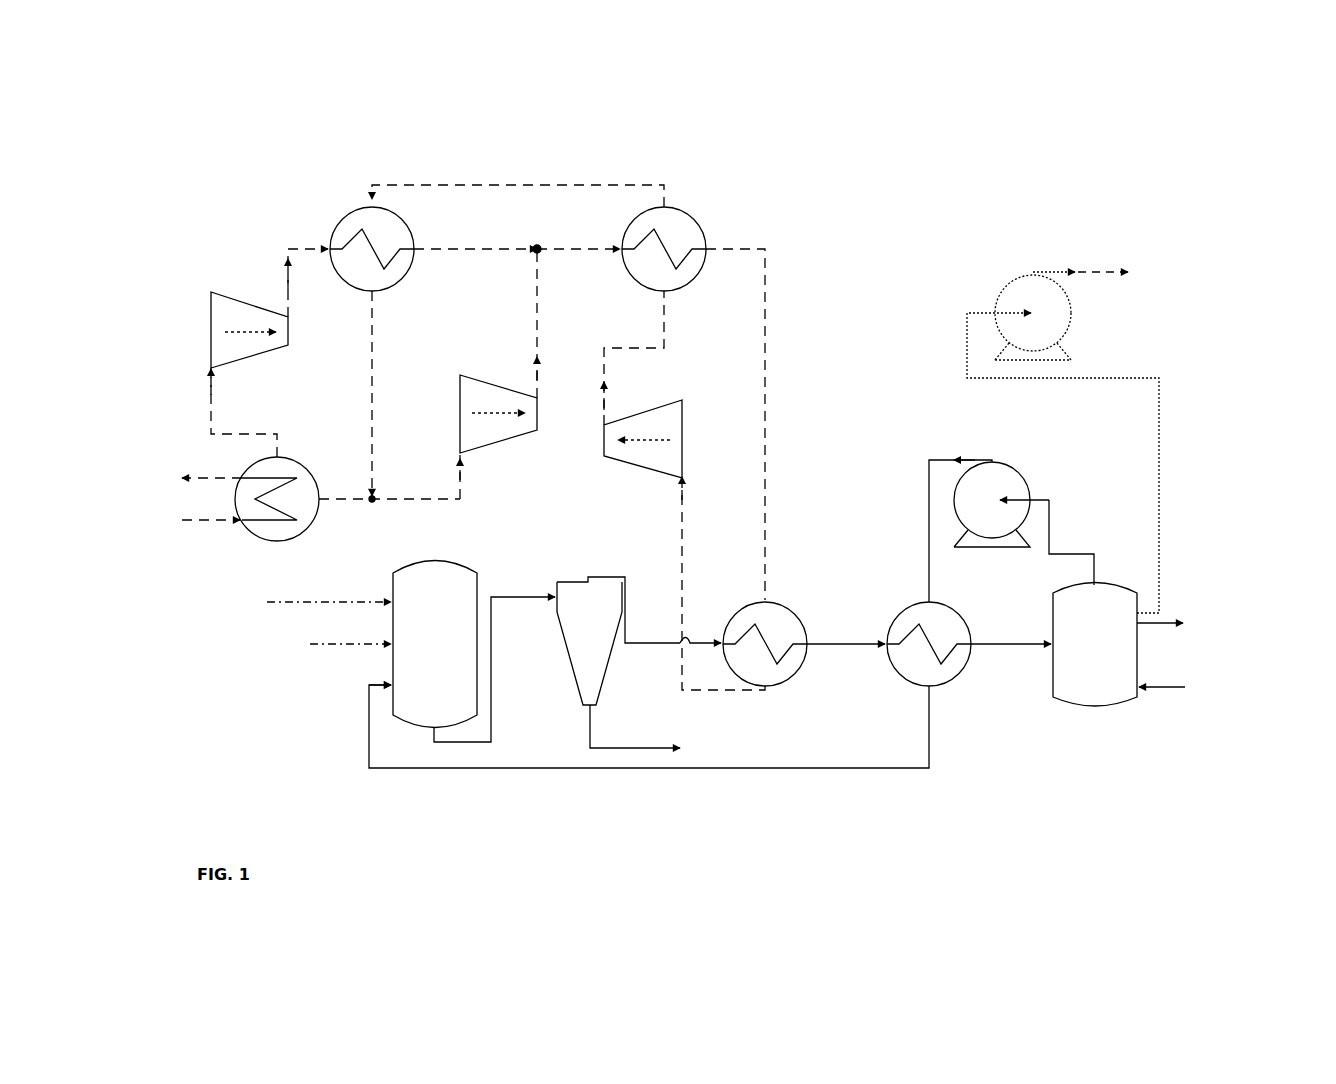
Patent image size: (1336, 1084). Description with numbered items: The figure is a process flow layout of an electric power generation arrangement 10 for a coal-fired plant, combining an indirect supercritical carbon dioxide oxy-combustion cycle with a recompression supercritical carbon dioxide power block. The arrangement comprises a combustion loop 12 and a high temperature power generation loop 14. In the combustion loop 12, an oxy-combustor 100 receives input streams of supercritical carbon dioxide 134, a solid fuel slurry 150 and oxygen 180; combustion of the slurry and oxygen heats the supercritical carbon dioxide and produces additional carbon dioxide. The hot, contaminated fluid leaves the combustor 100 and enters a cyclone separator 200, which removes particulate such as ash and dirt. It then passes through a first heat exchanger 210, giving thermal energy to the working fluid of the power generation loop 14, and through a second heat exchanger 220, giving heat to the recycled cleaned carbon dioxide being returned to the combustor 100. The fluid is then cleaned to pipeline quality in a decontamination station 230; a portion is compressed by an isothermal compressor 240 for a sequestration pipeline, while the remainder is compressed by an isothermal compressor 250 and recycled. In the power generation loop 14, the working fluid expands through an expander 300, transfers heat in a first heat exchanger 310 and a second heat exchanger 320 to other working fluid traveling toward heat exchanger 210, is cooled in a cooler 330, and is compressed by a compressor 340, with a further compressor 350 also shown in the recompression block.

The electric power generation arrangement 10 is at (1182, 160).
The combustion loop 12 is at (655, 814).
The high temperature power generation loop 14 is at (672, 152).
The oxy-combustor 100 is at (443, 838).
The supercritical carbon dioxide stream 134 is at (258, 691).
The solid fuel slurry 150 is at (255, 644).
The oxygen 180 is at (259, 604).
The cyclone separator 200 is at (607, 662).
The first heat exchanger 210 is at (757, 631).
The second heat exchanger 220 is at (923, 631).
The decontamination station 230 is at (1095, 666).
The isothermal compressor 240 is at (1033, 334).
The isothermal compressor 250 is at (992, 518).
The expander 300 is at (643, 428).
The first heat exchanger 310 is at (679, 238).
The second heat exchanger 320 is at (357, 238).
The cooler 330 is at (281, 510).
The compressor 340 is at (247, 318).
The recompressor 350 is at (497, 403).